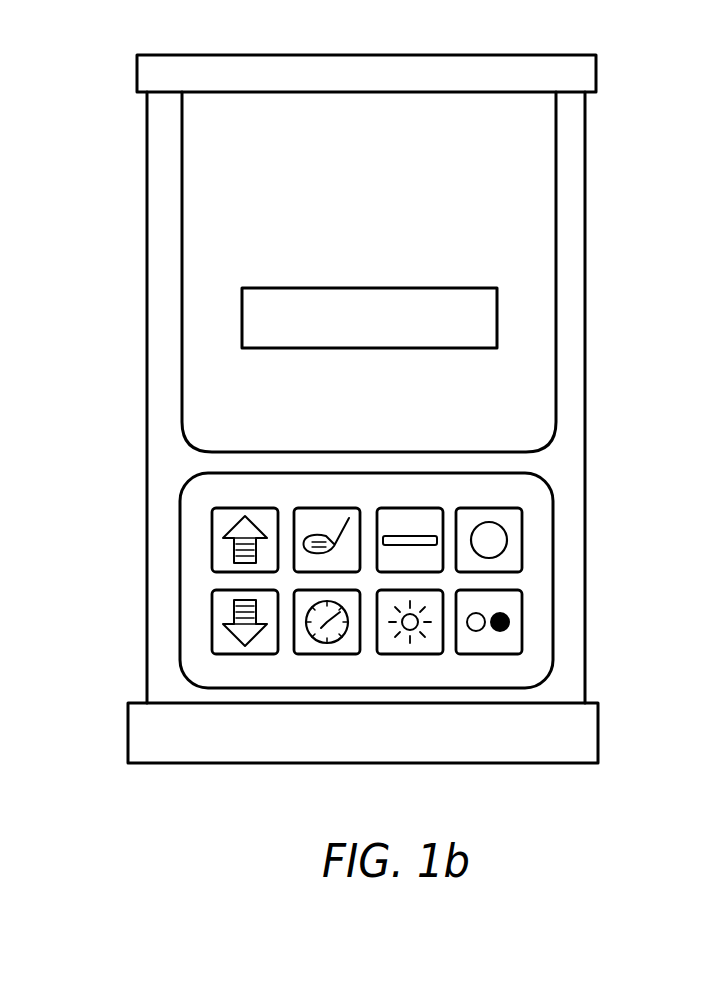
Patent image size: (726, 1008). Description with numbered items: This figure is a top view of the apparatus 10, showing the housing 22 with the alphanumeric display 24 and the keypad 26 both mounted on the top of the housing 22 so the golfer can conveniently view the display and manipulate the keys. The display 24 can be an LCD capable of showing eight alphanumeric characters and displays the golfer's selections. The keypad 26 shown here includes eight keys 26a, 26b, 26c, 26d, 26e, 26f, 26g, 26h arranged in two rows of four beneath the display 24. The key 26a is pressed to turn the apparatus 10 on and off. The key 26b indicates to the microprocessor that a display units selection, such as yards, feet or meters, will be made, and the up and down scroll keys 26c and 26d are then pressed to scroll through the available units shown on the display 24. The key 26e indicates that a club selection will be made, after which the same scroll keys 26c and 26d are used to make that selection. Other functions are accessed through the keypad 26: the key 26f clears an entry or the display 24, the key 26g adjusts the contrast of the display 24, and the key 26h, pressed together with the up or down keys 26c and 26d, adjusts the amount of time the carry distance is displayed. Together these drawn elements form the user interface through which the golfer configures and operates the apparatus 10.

The apparatus 10 is at (642, 133).
The housing 22 is at (575, 176).
The alphanumeric display 24 is at (497, 297).
The keypad 26 is at (553, 555).
The power key 26a is at (522, 622).
The units key 26b is at (443, 500).
The up scroll key 26c is at (212, 533).
The down scroll key 26d is at (212, 617).
The club key 26e is at (298, 500).
The clear key 26f is at (522, 522).
The contrast key 26g is at (460, 655).
The time key 26h is at (352, 655).